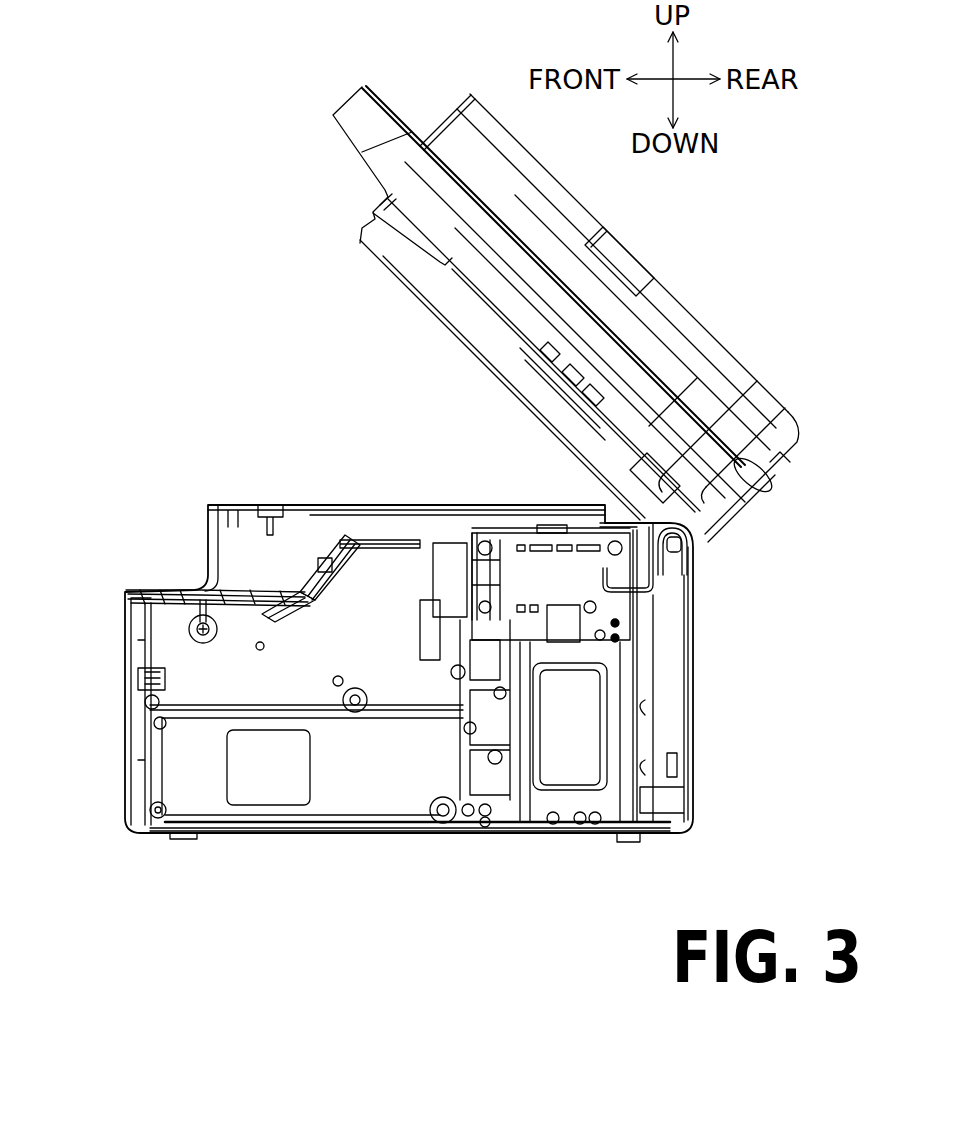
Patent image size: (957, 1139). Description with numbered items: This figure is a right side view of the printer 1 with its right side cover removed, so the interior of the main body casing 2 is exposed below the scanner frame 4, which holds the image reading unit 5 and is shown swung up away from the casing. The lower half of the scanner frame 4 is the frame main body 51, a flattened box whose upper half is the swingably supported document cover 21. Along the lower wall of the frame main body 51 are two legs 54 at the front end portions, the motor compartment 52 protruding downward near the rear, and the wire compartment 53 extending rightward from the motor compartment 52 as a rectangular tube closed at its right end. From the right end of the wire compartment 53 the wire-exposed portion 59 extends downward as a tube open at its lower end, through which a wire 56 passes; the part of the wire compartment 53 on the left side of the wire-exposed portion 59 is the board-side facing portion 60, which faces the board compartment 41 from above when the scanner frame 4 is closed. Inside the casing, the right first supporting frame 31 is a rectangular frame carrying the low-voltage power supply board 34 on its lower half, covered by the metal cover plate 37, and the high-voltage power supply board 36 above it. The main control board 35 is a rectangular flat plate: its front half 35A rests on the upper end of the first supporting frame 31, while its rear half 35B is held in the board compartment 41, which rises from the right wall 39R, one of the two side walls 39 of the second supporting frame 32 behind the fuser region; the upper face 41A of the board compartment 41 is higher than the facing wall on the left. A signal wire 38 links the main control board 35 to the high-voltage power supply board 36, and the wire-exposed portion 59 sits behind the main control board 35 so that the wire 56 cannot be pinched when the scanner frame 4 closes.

The printer 1 is at (400, 925).
The main body casing 2 is at (125, 634).
The scanner frame 4 is at (355, 96).
The image reading unit 5 is at (535, 282).
The document cover 21 is at (698, 328).
The first supporting frame 31 is at (128, 597).
The second supporting frame 32 is at (636, 688).
The low-voltage power supply board 34 is at (353, 812).
The main control board 35 is at (319, 524).
The front half 35A is at (357, 533).
The rear half 35B is at (513, 567).
The high-voltage power supply board 36 is at (132, 681).
The metal cover plate 37 is at (320, 810).
The signal wire 38 is at (442, 555).
The side wall 39 is at (419, 856).
The right wall 39R is at (623, 818).
The board compartment 41 is at (557, 523).
The upper face 41A is at (567, 523).
The frame main body 51 is at (374, 119).
The motor compartment 52 is at (574, 438).
The wire compartment 53 is at (734, 466).
The leg 54 is at (386, 204).
The wire 56 is at (660, 588).
The wire-exposed portion 59 is at (703, 531).
The board-side facing portion 60 is at (678, 486).